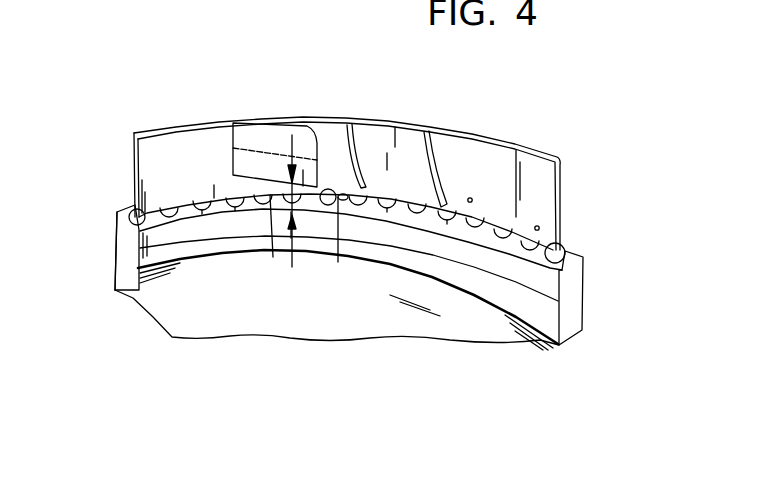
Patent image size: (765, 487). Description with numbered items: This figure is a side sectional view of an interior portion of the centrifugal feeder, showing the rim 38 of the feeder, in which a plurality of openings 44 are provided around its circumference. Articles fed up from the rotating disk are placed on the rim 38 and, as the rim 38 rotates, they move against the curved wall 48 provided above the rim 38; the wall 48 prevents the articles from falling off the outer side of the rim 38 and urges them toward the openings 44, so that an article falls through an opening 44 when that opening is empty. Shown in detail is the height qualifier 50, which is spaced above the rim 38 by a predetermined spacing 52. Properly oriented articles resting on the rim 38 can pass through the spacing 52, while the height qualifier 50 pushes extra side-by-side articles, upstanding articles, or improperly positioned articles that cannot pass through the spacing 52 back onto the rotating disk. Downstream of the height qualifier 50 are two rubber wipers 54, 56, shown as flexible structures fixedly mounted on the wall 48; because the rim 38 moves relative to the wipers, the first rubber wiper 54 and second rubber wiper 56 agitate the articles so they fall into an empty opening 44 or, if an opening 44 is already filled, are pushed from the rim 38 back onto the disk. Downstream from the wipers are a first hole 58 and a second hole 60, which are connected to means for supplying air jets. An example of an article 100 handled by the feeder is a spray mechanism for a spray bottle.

The rim 38 is at (127, 210).
The openings 44 is at (243, 190).
The curved wall 48 is at (535, 172).
The height qualifier 50 is at (252, 135).
The spacing 52 is at (257, 188).
The first rubber wiper 54 is at (355, 150).
The second rubber wiper 56 is at (433, 160).
The first hole 58 is at (472, 198).
The second hole 60 is at (540, 228).
The article 100 is at (460, 320).